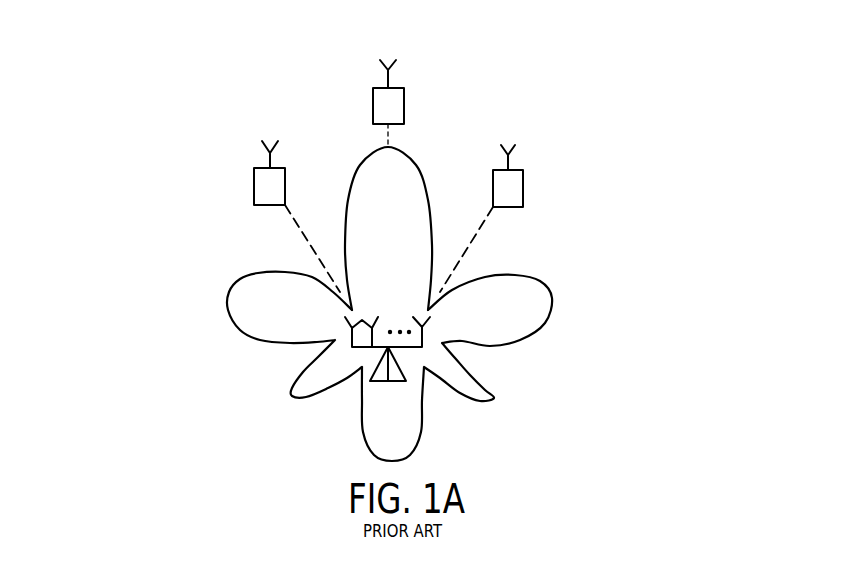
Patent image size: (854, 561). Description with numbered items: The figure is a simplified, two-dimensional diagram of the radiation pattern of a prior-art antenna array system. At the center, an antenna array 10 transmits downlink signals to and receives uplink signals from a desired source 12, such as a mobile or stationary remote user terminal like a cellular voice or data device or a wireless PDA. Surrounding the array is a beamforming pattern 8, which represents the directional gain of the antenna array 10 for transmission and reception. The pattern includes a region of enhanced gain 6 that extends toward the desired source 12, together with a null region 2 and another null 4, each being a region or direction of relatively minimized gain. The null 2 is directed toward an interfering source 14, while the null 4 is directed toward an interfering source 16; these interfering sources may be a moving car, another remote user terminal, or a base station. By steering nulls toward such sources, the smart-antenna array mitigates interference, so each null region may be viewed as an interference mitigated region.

The null region 2 is at (352, 310).
The null region 4 is at (428, 310).
The region of enhanced gain 6 is at (417, 164).
The beamforming pattern 8 is at (732, 275).
The antenna array 10 is at (378, 382).
The desired source 12 is at (598, 94).
The interfering source 14 is at (255, 205).
The interfering source 16 is at (716, 197).